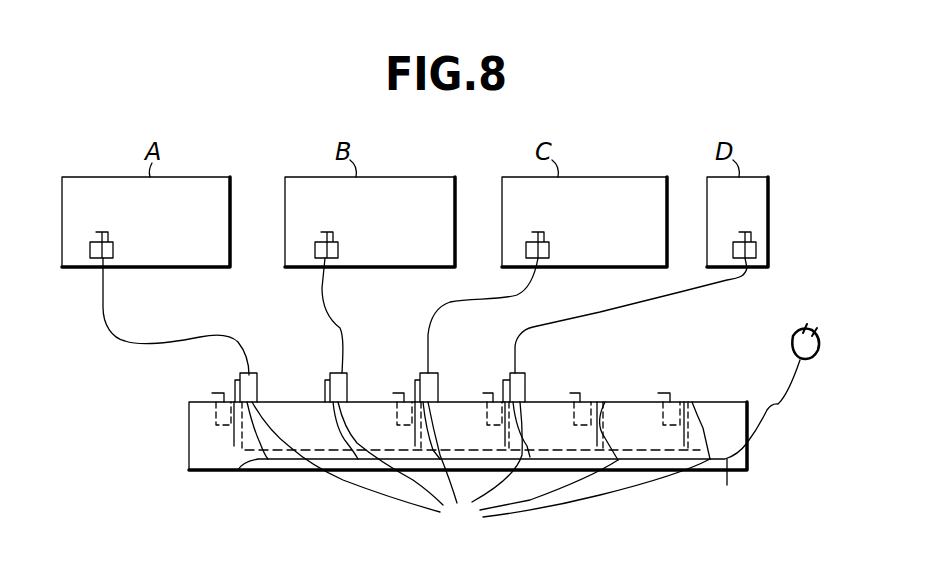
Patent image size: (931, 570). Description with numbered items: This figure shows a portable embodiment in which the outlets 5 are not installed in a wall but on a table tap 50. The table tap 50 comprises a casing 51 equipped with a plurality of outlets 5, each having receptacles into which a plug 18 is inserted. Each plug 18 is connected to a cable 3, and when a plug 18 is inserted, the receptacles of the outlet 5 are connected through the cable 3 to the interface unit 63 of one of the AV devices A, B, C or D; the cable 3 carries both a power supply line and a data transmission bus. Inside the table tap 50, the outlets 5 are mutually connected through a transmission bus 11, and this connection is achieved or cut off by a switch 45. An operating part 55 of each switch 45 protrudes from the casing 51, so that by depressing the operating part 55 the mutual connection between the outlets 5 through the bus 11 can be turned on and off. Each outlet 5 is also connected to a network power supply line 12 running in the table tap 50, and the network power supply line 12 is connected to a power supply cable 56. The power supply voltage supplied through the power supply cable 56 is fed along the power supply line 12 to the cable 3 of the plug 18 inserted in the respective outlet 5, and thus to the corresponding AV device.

The cable 3 is at (160, 342).
The outlet 5 is at (478, 468).
The transmission bus 11 is at (643, 452).
The network power supply line 12 is at (238, 470).
The plug 18 is at (320, 390).
The switch 45 is at (605, 402).
The table tap 50 is at (158, 420).
The casing 51 is at (188, 428).
The operating part 55 is at (487, 393).
The power supply cable 56 is at (777, 405).
The interface unit 63 is at (546, 235).